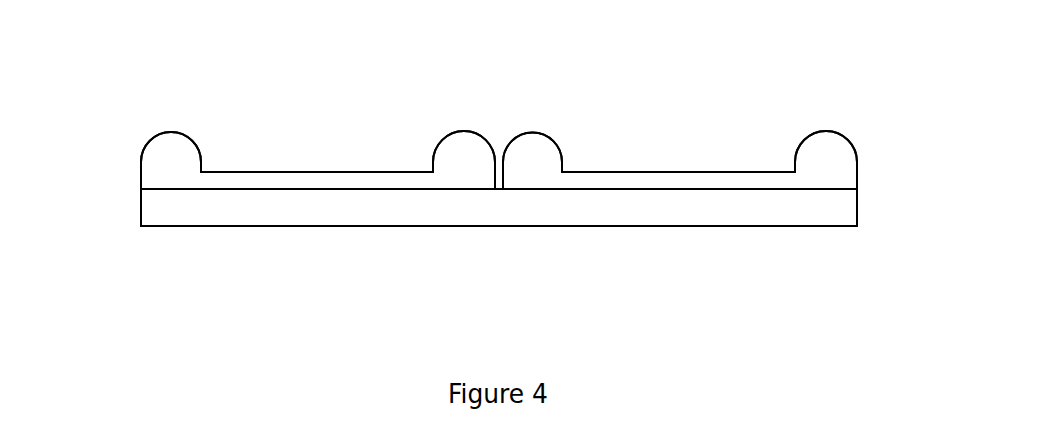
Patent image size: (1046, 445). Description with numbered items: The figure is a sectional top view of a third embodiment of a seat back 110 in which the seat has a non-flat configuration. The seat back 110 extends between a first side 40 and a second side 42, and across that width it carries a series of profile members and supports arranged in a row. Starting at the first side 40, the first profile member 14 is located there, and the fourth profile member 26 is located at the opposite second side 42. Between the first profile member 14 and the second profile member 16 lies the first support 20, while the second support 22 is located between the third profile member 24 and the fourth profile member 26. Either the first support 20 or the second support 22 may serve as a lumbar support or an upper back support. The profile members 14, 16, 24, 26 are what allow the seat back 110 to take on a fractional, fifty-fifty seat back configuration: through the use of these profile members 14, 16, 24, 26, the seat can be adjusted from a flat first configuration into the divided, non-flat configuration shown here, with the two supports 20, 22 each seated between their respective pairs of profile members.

The seat back 110 is at (635, 112).
The first side 40 is at (98, 133).
The second side 42 is at (880, 172).
The first profile member 14 is at (175, 135).
The second profile member 16 is at (468, 140).
The third profile member 24 is at (538, 137).
The fourth profile member 26 is at (838, 145).
The first support 20 is at (282, 172).
The second support 22 is at (702, 171).